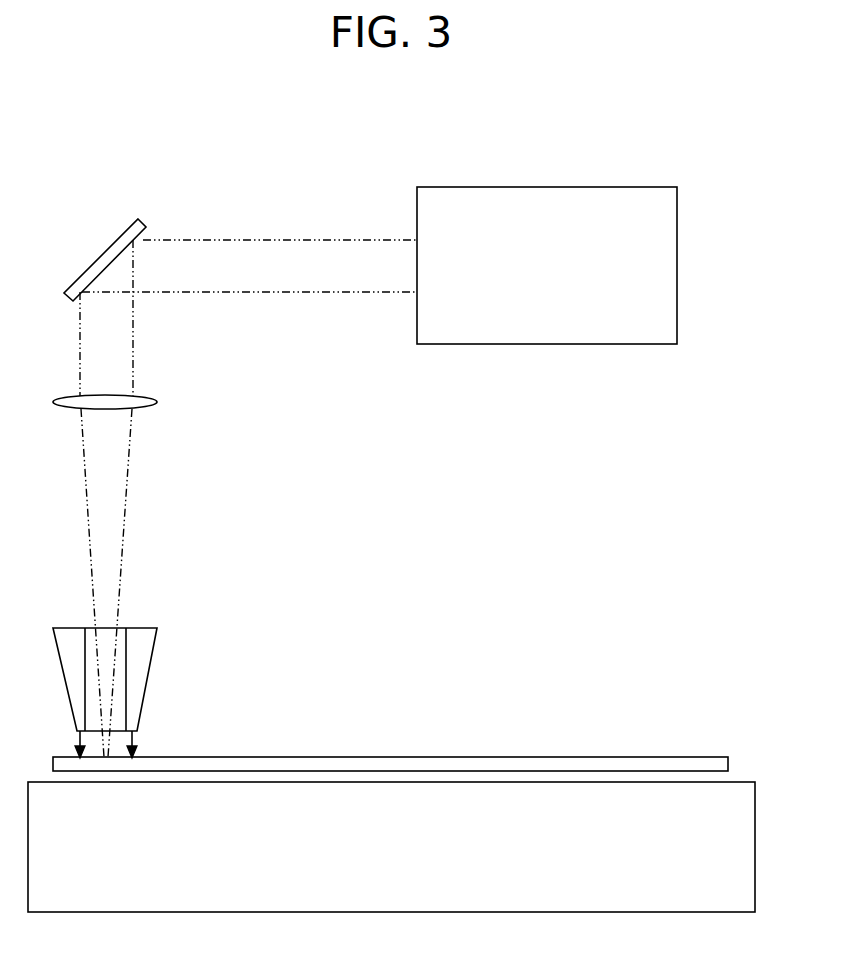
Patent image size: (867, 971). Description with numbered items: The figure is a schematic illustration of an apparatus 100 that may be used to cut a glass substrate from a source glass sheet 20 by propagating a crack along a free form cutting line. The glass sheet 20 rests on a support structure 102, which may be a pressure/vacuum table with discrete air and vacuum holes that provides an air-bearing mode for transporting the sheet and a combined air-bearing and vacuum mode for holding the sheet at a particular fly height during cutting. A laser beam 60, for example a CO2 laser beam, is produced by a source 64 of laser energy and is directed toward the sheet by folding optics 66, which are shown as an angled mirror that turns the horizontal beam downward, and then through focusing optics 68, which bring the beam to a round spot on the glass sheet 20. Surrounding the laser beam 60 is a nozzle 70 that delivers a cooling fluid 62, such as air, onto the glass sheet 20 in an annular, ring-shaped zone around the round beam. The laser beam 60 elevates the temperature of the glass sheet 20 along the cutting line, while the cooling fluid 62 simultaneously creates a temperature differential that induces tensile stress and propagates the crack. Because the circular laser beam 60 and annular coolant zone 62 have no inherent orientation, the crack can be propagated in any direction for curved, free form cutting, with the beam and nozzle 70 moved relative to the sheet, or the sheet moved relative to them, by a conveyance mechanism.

The laser processing system 100 is at (371, 108).
The source of laser energy 64 is at (547, 265).
The laser beam 60 is at (94, 591).
The folding optics 66 is at (120, 234).
The focusing optics 68 is at (157, 401).
The nozzle 70 is at (145, 627).
The cooling fluid 62 is at (143, 744).
The glass sheet 20 is at (328, 757).
The support structure 102 is at (391, 847).